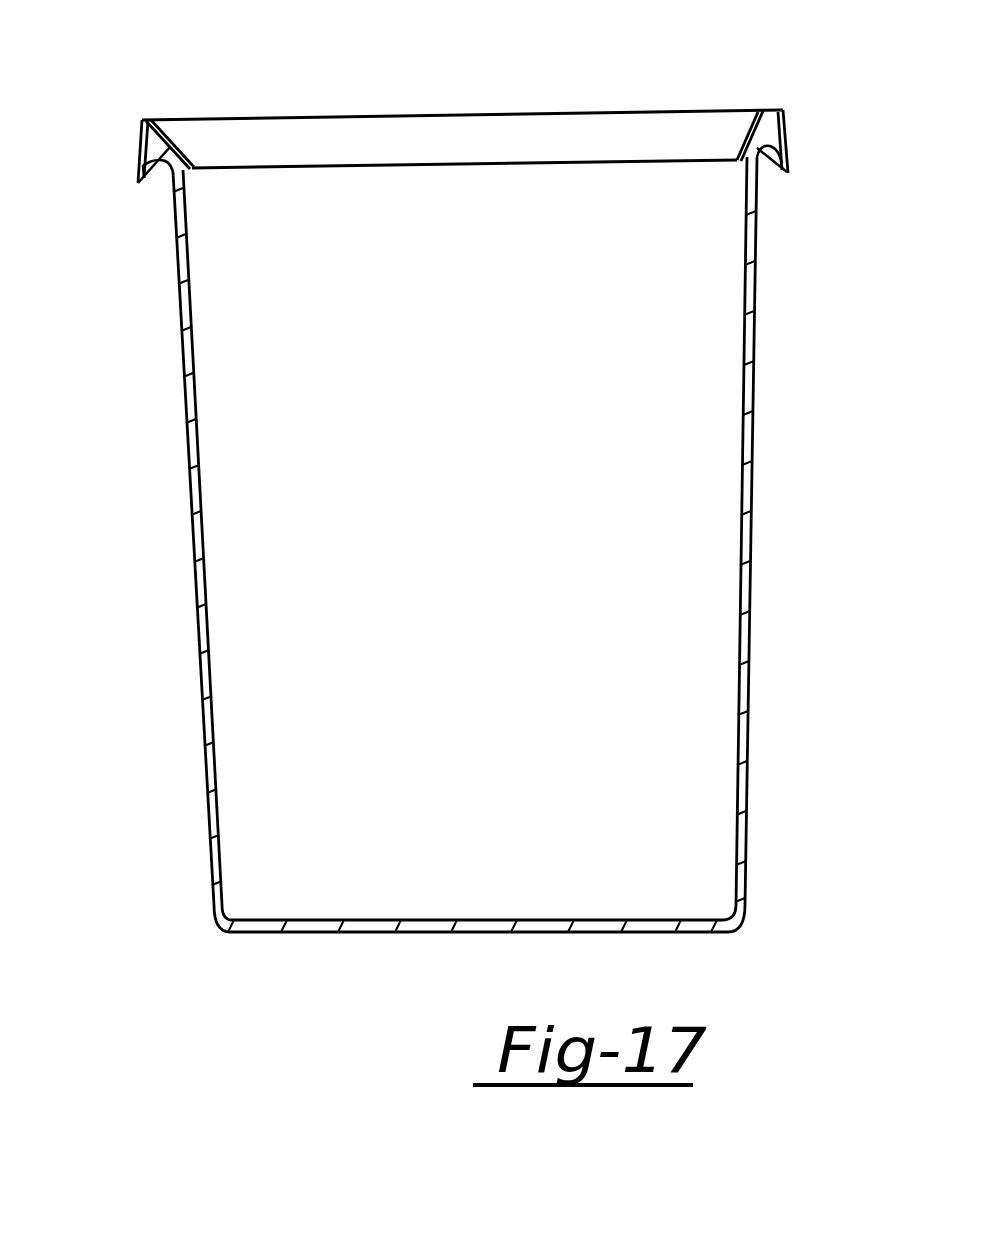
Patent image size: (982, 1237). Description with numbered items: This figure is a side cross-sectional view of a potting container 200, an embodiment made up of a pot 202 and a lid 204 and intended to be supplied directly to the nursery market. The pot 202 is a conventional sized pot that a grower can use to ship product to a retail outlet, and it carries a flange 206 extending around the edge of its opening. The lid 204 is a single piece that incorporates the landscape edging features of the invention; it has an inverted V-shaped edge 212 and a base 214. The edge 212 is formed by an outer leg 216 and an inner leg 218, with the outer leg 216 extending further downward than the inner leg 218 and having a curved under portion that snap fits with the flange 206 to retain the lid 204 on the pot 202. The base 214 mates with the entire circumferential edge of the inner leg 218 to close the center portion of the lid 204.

The potting container 200 is at (577, 55).
The pot 202 is at (213, 735).
The lid 204 is at (645, 120).
The flange 206 is at (790, 143).
The inverted V-shaped edge 212 is at (147, 120).
The base 214 is at (287, 170).
The outer leg 216 is at (140, 165).
The inner leg 218 is at (183, 168).